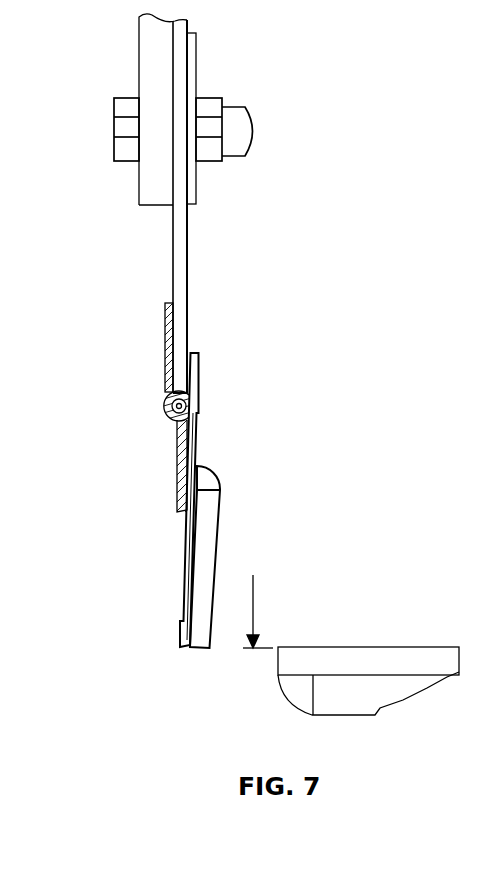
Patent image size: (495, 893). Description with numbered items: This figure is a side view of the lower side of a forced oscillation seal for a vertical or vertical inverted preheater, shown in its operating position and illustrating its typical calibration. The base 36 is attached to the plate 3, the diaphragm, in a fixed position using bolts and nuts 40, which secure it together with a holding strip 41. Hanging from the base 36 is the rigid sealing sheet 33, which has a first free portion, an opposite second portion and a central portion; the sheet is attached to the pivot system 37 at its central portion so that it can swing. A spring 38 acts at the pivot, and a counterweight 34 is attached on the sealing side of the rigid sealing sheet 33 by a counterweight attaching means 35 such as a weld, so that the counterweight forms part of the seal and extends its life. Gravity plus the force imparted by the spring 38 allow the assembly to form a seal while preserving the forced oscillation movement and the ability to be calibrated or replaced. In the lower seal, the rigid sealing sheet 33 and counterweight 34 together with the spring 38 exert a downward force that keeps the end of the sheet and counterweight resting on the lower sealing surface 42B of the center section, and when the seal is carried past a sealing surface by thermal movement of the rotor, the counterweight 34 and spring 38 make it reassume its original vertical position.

The plate 3 is at (153, 65).
The holding strip 41 is at (196, 43).
The bolts and nuts 40 is at (118, 130).
The base 36 is at (178, 282).
The rigid sealing sheet 33 is at (190, 512).
The spring 38 is at (167, 402).
The pivot system 37 is at (182, 405).
The counterweight attaching means 35 is at (214, 475).
The counterweight 34 is at (207, 578).
The lower sealing surface 42B is at (328, 647).